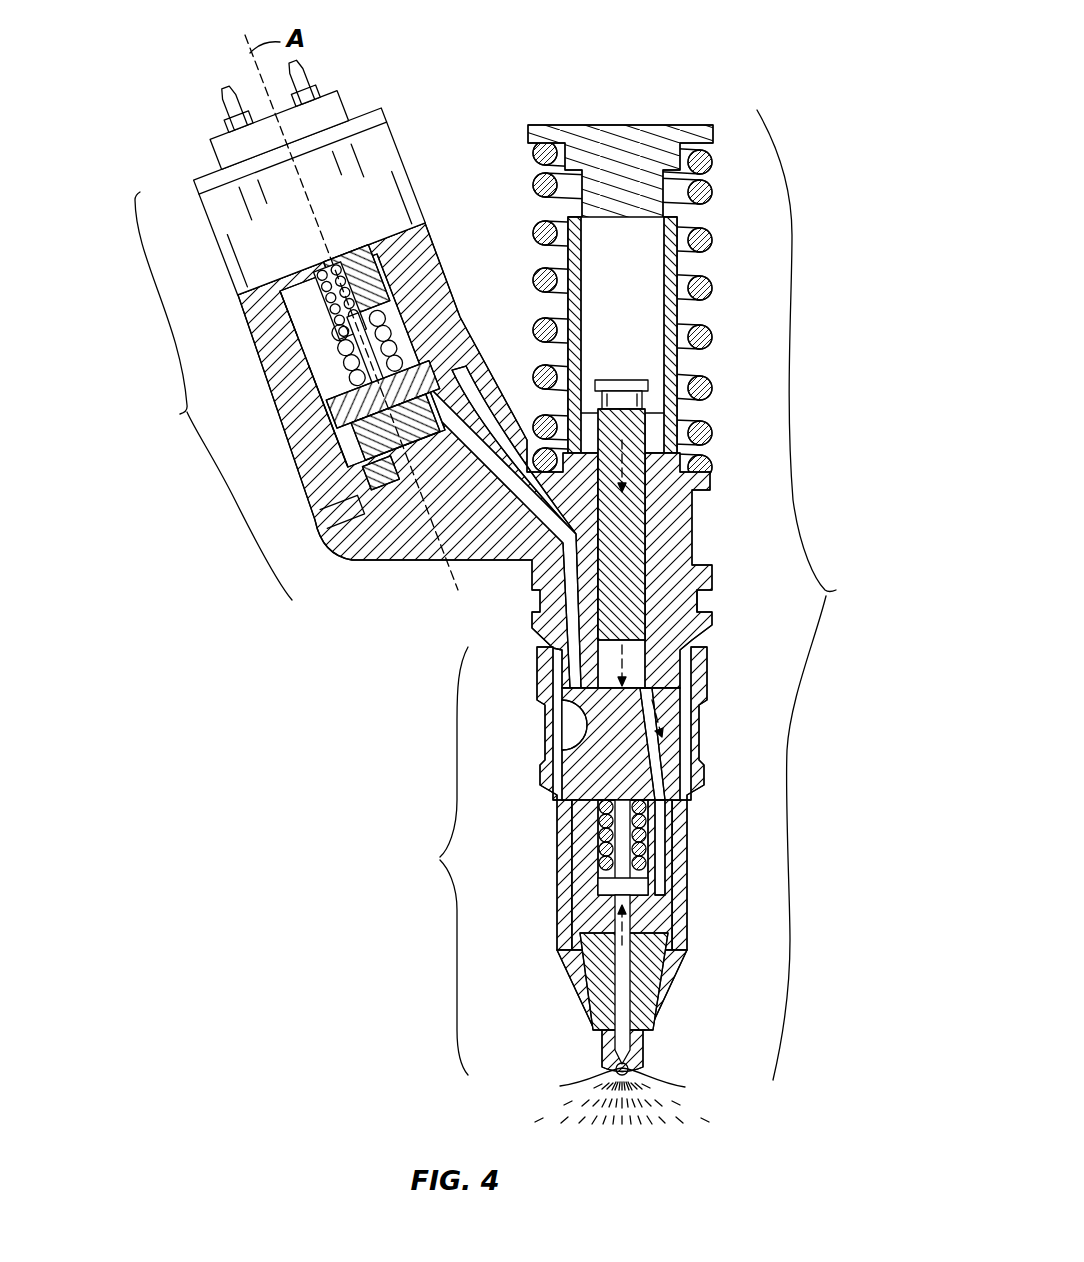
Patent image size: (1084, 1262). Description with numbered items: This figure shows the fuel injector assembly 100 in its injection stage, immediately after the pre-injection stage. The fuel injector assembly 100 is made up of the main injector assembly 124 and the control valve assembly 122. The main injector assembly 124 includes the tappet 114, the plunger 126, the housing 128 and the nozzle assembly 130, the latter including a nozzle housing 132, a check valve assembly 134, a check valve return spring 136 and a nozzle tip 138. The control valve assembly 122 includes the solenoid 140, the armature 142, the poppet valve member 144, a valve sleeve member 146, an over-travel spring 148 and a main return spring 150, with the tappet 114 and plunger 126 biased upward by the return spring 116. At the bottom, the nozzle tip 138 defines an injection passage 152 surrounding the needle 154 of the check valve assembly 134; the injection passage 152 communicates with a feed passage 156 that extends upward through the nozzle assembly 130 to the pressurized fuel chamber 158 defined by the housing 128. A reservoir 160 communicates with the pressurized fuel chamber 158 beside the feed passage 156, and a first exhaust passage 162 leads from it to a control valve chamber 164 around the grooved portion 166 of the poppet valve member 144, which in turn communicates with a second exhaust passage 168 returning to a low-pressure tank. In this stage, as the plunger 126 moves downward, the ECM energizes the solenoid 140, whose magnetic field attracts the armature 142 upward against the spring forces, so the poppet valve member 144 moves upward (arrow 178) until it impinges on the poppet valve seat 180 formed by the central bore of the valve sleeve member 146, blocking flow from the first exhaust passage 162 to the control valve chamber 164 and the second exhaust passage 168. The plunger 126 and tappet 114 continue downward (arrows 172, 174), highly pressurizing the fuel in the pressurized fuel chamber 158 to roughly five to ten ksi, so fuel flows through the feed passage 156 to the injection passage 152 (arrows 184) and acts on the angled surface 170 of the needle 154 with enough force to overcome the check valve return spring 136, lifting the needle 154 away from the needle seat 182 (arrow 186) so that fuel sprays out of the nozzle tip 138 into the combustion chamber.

The fuel injector assembly 100 is at (783, 48).
The tappet 114 is at (648, 143).
The return spring 116 is at (707, 197).
The control valve assembly 122 is at (180, 414).
The main injector assembly 124 is at (836, 590).
The plunger 126 is at (628, 437).
The housing 128 is at (681, 702).
The nozzle assembly 130 is at (440, 857).
The nozzle housing 132 is at (541, 675).
The check valve assembly 134 is at (600, 908).
The check valve return spring 136 is at (600, 836).
The nozzle tip 138 is at (646, 1040).
The solenoid 140 is at (385, 158).
The armature 142 is at (368, 256).
The poppet valve member 144 is at (440, 392).
The valve sleeve member 146 is at (345, 508).
The over-travel spring 148 is at (430, 300).
The main return spring 150 is at (327, 254).
The injection passage 152 is at (612, 1026).
The needle 154 is at (656, 978).
The feed passage 156 is at (650, 886).
The pressurized fuel chamber 158 is at (704, 596).
The reservoir 160 is at (580, 736).
The first exhaust passage 162 is at (432, 558).
The control valve chamber 164 is at (345, 486).
The grooved portion 166 is at (440, 330).
The second exhaust passage 168 is at (474, 576).
The angled surface 170 is at (643, 1081).
The arrow 172 is at (638, 470).
The arrow 174 is at (622, 122).
The arrow 178 is at (306, 456).
The poppet valve seat 180 is at (437, 364).
The needle seat 182 is at (614, 1098).
The arrows 184 is at (648, 630).
The arrow 186 is at (656, 950).